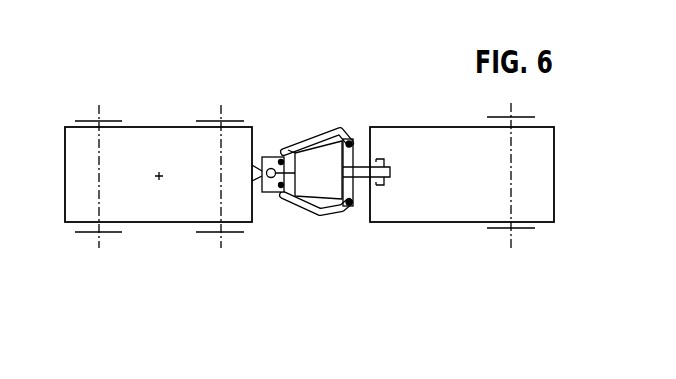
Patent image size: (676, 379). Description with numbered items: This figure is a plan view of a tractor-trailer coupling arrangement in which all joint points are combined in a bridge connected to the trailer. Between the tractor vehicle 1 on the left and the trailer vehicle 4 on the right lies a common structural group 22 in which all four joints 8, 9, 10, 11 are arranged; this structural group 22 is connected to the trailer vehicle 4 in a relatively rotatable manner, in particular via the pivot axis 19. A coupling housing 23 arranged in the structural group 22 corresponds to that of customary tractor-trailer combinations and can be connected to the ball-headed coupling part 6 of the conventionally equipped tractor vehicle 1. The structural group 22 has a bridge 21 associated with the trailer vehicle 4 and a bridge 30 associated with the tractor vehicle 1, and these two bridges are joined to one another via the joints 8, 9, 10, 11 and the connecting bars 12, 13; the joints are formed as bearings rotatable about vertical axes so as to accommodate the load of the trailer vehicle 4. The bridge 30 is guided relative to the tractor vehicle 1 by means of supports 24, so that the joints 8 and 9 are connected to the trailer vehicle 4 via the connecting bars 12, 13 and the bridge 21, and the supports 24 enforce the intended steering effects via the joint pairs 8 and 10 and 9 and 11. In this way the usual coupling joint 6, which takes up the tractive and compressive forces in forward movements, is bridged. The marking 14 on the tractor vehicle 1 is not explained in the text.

The tractor vehicle 1 is at (132, 135).
The trailer vehicle 4 is at (462, 138).
The ball-headed coupling part 6 is at (298, 177).
The joint 8 is at (279, 154).
The joint 9 is at (281, 194).
The joint 10 is at (351, 140).
The joint 11 is at (350, 208).
The connecting bar 12 is at (327, 128).
The connecting bar 13 is at (330, 213).
The roller axis 14 is at (156, 180).
The pivot axis 19 is at (397, 160).
The bridge 21 is at (357, 207).
The structural group 22 is at (316, 226).
The coupling housing 23 is at (295, 152).
The supports 24 is at (265, 155).
The bridge 30 is at (269, 194).